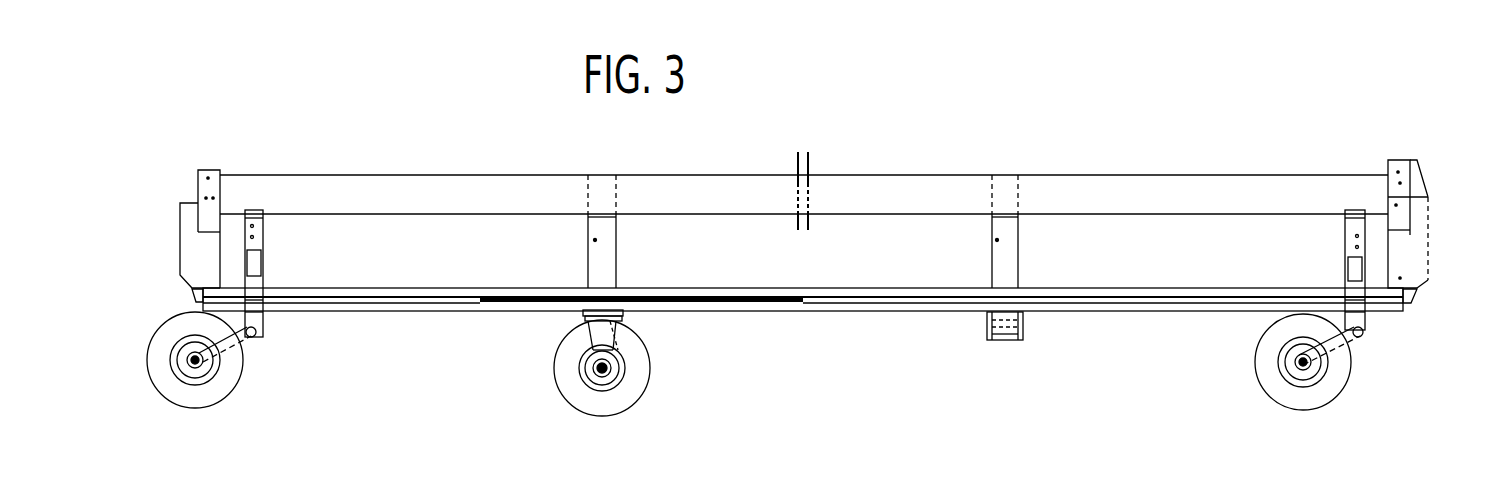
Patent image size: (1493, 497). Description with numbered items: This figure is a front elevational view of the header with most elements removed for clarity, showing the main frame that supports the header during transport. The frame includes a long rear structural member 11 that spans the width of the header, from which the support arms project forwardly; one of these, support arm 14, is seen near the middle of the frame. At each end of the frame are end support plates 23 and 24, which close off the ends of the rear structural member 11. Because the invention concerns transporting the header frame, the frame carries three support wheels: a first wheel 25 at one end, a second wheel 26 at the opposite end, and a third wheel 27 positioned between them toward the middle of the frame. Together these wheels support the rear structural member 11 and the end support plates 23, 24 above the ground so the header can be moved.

The rear structural member 11 is at (873, 178).
The support arm 14 is at (987, 323).
The end support plate 23 is at (183, 243).
The end support plate 24 is at (1428, 230).
The first wheel 25 is at (1233, 352).
The second wheel 26 is at (273, 360).
The third wheel 27 is at (672, 344).